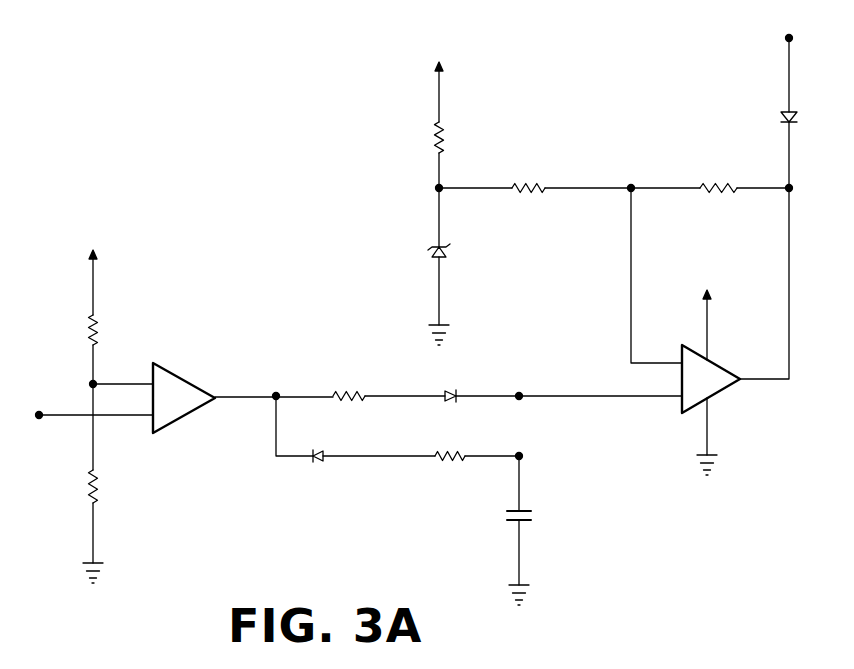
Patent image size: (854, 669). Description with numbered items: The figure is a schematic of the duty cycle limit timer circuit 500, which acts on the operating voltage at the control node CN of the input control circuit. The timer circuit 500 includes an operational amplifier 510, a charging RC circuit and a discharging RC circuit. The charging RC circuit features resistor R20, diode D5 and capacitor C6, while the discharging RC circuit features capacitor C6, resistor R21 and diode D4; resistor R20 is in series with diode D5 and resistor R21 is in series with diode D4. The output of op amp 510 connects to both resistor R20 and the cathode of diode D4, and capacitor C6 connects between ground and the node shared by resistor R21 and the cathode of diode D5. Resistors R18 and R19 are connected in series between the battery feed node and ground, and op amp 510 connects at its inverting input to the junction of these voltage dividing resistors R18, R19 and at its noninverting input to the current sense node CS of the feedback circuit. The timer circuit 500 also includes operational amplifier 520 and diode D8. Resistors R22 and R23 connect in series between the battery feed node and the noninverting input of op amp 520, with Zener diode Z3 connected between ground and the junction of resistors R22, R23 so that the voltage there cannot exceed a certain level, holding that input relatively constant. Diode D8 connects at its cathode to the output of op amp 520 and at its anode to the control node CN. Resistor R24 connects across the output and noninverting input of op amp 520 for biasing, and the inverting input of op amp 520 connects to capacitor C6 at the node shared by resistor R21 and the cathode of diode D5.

The duty cycle limit timer circuit 500 is at (268, 255).
The current sense node CS is at (36, 390).
The control node CN is at (784, 15).
The resistor R18 is at (98, 330).
The resistor R19 is at (99, 492).
The resistor R20 is at (350, 391).
The resistor R21 is at (457, 462).
The resistor R22 is at (432, 130).
The resistor R23 is at (541, 184).
The resistor R24 is at (722, 184).
The diode D4 is at (319, 463).
The diode D5 is at (451, 389).
The diode D8 is at (781, 116).
The Zener diode Z3 is at (431, 250).
The capacitor C6 is at (533, 515).
The operational amplifier 510 is at (172, 420).
The operational amplifier 520 is at (720, 385).